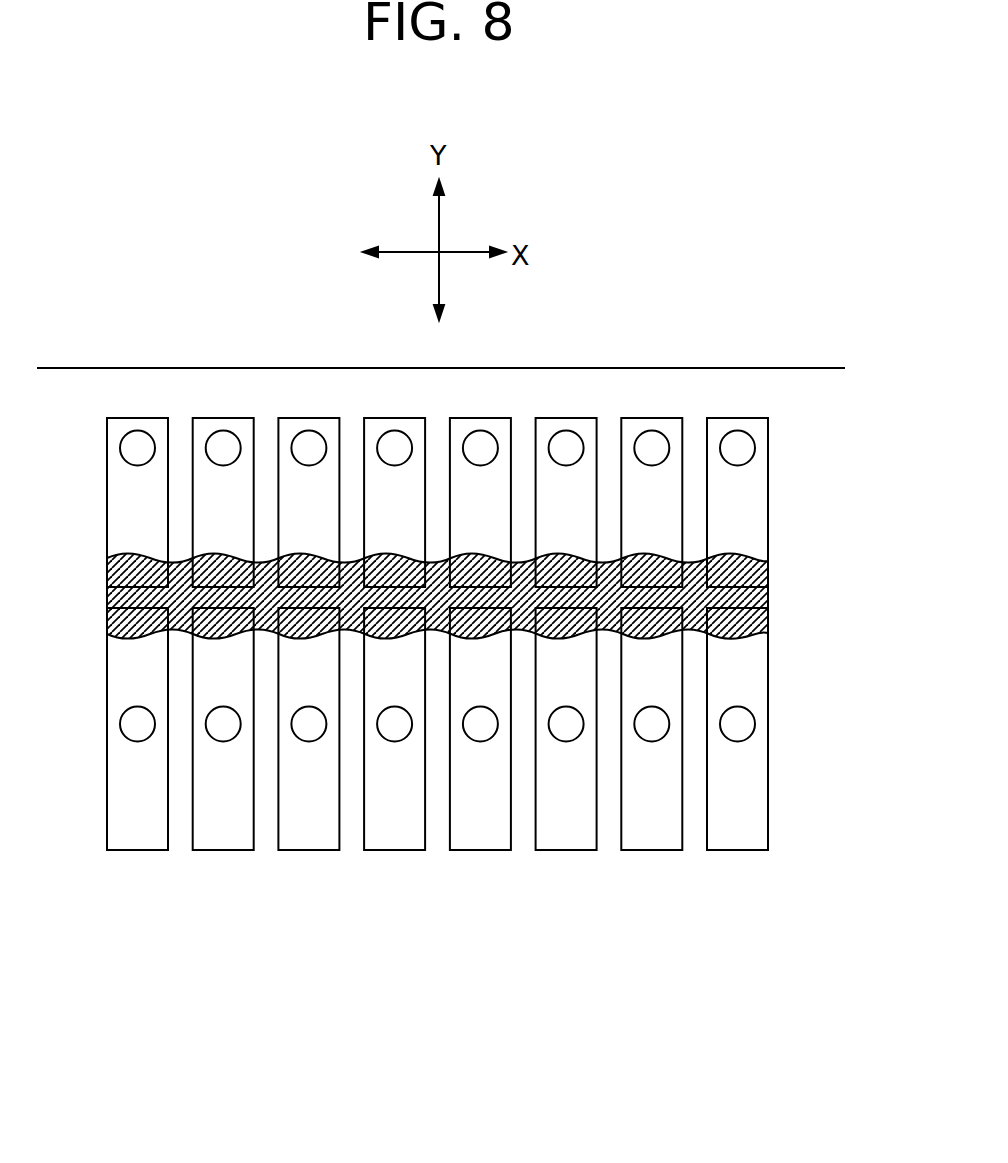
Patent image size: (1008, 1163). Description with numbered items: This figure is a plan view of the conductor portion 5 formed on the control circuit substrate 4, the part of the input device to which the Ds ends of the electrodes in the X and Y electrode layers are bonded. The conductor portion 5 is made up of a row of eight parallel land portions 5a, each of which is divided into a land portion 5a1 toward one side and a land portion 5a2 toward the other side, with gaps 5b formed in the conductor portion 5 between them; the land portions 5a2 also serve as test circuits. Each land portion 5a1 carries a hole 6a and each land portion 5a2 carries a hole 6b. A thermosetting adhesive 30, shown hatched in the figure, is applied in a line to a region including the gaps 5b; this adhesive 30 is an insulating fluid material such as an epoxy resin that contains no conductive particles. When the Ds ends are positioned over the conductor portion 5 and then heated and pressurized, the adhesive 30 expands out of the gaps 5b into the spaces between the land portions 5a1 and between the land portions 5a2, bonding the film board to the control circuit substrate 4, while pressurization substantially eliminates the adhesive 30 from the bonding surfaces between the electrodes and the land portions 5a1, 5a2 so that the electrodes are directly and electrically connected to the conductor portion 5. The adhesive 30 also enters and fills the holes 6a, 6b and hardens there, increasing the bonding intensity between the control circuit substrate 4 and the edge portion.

The control circuit substrate 4 is at (785, 367).
The conductor portion 5 is at (452, 644).
The land portion 5a is at (494, 699).
The land portion 5a1 is at (750, 659).
The land portion 5a2 is at (752, 513).
The gap 5b is at (108, 598).
The hole 6a is at (226, 729).
The hole 6b is at (224, 445).
The thermosetting adhesive 30 is at (107, 575).